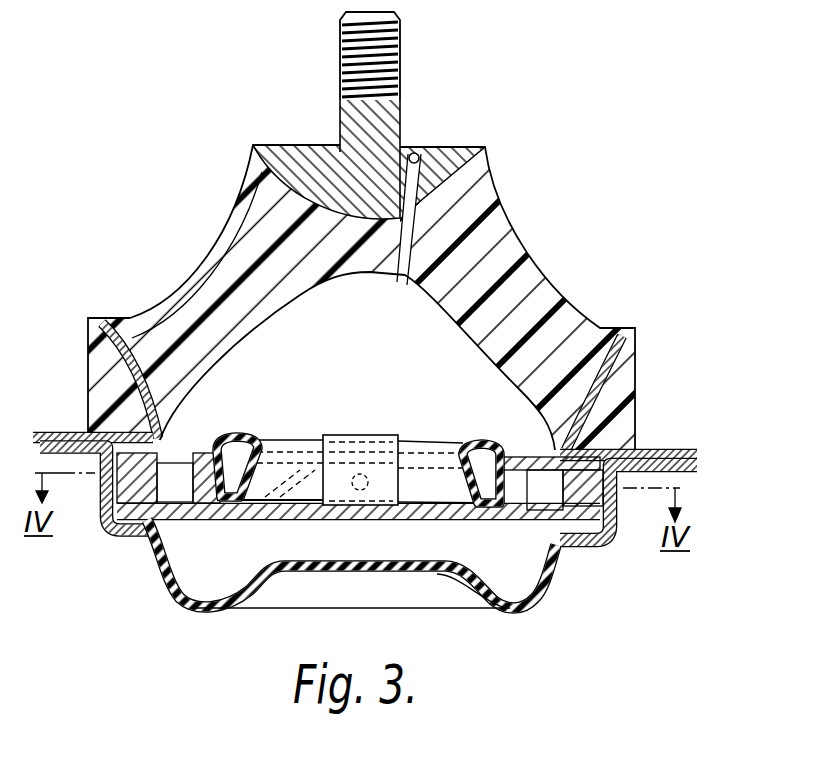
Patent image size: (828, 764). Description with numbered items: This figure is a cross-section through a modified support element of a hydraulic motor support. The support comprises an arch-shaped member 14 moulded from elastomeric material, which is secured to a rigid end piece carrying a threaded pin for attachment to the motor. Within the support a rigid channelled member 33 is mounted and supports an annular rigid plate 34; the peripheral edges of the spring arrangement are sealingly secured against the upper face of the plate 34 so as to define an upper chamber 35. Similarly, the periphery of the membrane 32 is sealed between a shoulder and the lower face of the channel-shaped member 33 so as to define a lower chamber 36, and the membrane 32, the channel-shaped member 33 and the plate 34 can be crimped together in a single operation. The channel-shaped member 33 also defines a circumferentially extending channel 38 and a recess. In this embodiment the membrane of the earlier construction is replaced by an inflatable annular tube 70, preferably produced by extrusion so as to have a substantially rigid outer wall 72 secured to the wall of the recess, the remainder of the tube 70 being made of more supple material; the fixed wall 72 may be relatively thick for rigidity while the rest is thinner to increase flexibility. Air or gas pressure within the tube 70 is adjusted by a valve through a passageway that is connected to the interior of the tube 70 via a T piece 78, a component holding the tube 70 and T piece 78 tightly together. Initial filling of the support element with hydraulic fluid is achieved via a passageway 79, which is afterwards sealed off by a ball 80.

The arch-shaped member 14 is at (240, 220).
The membrane 32 is at (277, 571).
The channelled member 33 is at (122, 483).
The annular rigid plate 34 is at (97, 433).
The upper chamber 35 is at (373, 337).
The lower chamber 36 is at (347, 540).
The channel 38 is at (173, 487).
The inflatable annular tube 70 is at (236, 452).
The outer wall 72 is at (208, 462).
The T piece 78 is at (354, 435).
The passageway 79 is at (418, 159).
The ball 80 is at (416, 152).